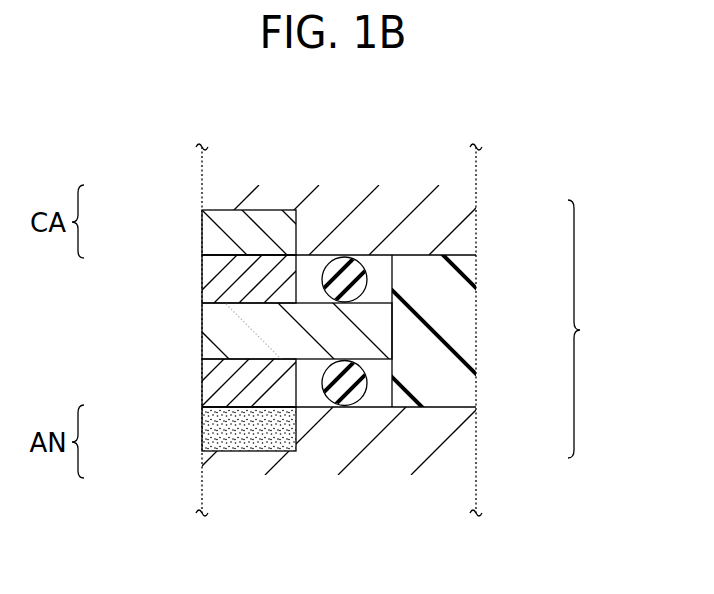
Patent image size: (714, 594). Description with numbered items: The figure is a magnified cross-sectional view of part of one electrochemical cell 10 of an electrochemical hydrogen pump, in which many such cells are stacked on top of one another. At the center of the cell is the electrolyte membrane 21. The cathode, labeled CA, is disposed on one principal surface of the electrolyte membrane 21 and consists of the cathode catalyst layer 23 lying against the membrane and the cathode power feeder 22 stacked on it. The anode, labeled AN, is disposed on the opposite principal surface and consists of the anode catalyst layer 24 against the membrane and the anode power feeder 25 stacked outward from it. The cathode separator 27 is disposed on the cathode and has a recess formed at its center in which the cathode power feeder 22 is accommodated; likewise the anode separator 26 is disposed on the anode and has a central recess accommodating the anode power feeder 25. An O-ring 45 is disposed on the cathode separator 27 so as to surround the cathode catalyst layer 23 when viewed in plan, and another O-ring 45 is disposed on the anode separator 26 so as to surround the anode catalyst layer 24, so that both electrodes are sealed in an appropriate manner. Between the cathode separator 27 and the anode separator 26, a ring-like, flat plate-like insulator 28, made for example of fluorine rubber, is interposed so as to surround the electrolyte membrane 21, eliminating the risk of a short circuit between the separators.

The electrochemical cell 10 is at (592, 329).
The electrolyte membrane 21 is at (220, 325).
The cathode power feeder 22 is at (202, 233).
The cathode catalyst layer 23 is at (202, 277).
The anode catalyst layer 24 is at (204, 383).
The anode power feeder 25 is at (202, 427).
The anode separator 26 is at (432, 445).
The cathode separator 27 is at (437, 222).
The insulator 28 is at (453, 335).
The O-ring 45 is at (345, 274).